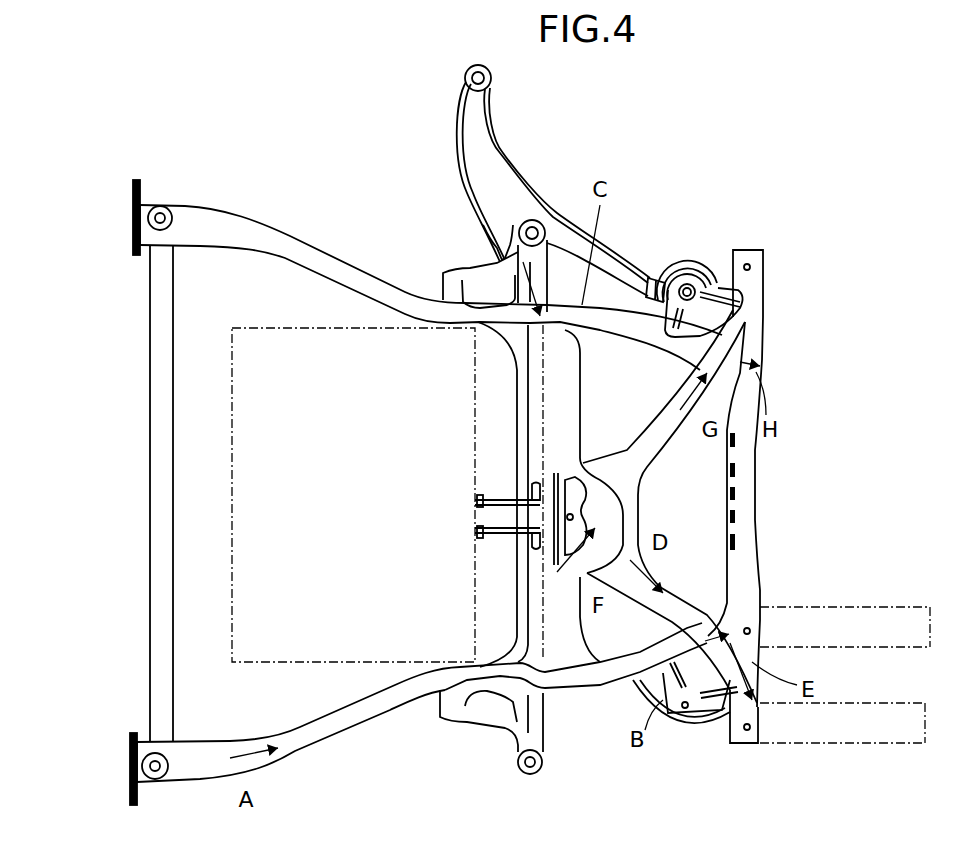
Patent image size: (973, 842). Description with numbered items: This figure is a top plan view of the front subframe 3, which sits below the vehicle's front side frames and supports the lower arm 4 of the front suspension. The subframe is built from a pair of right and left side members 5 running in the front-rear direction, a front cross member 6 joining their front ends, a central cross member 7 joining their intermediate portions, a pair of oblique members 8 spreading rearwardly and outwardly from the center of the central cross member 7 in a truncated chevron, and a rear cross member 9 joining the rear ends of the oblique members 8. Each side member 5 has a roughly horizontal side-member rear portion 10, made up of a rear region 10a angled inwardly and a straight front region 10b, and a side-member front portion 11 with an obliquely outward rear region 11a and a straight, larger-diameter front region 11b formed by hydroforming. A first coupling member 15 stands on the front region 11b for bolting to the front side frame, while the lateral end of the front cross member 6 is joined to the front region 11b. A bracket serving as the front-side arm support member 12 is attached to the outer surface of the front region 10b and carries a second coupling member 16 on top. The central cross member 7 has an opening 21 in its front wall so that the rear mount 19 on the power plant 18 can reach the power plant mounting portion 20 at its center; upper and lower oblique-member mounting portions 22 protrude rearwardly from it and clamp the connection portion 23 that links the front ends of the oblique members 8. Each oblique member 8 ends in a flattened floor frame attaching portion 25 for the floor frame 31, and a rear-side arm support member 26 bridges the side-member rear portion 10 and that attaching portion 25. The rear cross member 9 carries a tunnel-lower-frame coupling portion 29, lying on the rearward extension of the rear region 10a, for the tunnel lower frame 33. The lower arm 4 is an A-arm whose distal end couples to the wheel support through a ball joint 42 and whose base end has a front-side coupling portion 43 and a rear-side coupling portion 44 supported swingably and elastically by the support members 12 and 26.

The front subframe 3 is at (268, 186).
The lower arm 4 is at (518, 163).
The side member 5 is at (404, 287).
The front cross member 6 is at (150, 485).
The central cross member 7 is at (520, 420).
The oblique member 8 is at (667, 433).
The rear cross member 9 is at (750, 483).
The side-member rear portion 10 is at (610, 292).
The rear region 10a is at (662, 350).
The front region 10b is at (576, 330).
The side-member front portion 11 is at (263, 254).
The rear region 11a is at (343, 270).
The front region 11b is at (199, 220).
The front-side arm support member 12 is at (457, 278).
The first coupling member 15 is at (133, 214).
The second coupling member 16 is at (541, 210).
The power plant 18 is at (228, 493).
The rear mount 19 is at (500, 500).
The power plant mounting portion 20 is at (585, 463).
The opening 21 is at (527, 538).
The oblique-member mounting portion 22 is at (603, 500).
The connection portion 23 is at (645, 508).
The floor frame attaching portion 25 is at (763, 272).
The rear-side arm support member 26 is at (697, 262).
The tunnel-lower-frame coupling portion 29 is at (762, 342).
The floor frame 31 is at (918, 700).
The tunnel lower frame 33 is at (878, 606).
The ball joint 42 is at (468, 72).
The front-side coupling portion 43 is at (508, 238).
The rear-side coupling portion 44 is at (690, 262).